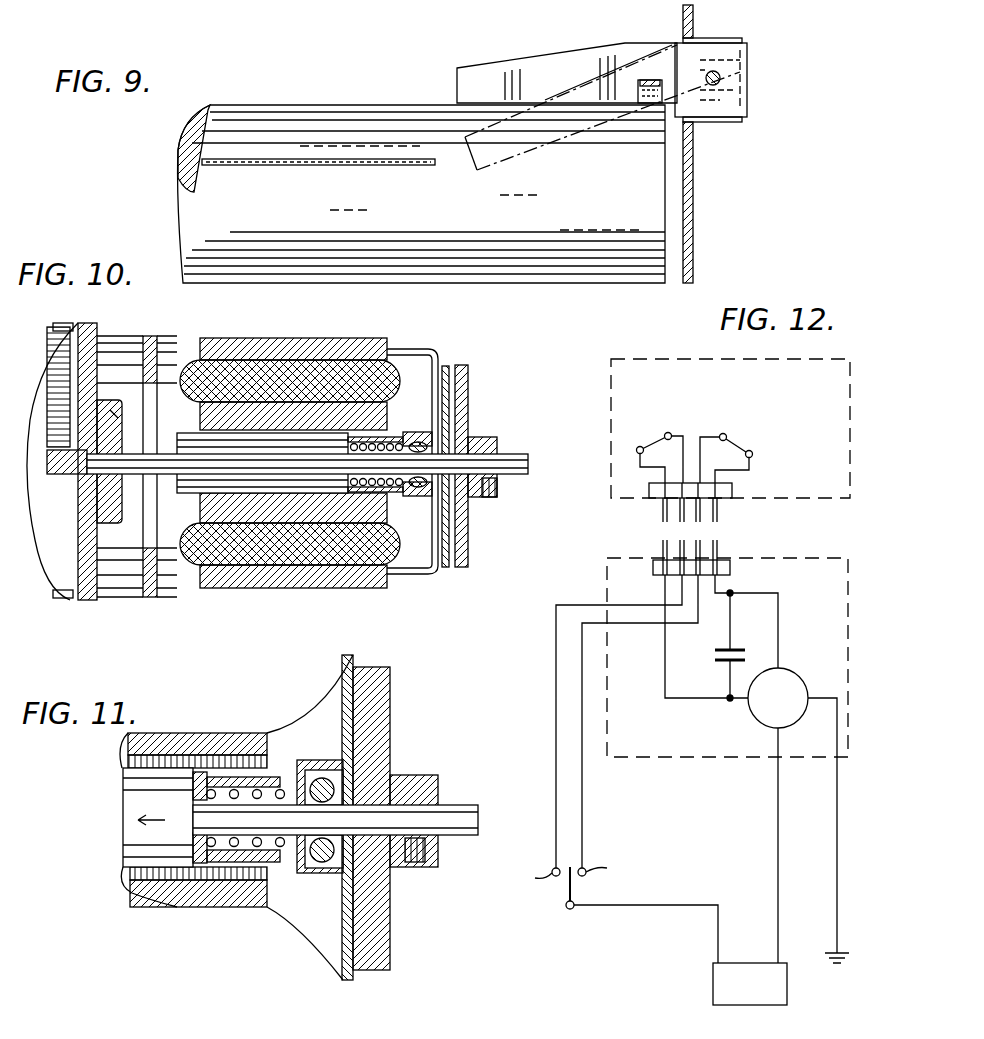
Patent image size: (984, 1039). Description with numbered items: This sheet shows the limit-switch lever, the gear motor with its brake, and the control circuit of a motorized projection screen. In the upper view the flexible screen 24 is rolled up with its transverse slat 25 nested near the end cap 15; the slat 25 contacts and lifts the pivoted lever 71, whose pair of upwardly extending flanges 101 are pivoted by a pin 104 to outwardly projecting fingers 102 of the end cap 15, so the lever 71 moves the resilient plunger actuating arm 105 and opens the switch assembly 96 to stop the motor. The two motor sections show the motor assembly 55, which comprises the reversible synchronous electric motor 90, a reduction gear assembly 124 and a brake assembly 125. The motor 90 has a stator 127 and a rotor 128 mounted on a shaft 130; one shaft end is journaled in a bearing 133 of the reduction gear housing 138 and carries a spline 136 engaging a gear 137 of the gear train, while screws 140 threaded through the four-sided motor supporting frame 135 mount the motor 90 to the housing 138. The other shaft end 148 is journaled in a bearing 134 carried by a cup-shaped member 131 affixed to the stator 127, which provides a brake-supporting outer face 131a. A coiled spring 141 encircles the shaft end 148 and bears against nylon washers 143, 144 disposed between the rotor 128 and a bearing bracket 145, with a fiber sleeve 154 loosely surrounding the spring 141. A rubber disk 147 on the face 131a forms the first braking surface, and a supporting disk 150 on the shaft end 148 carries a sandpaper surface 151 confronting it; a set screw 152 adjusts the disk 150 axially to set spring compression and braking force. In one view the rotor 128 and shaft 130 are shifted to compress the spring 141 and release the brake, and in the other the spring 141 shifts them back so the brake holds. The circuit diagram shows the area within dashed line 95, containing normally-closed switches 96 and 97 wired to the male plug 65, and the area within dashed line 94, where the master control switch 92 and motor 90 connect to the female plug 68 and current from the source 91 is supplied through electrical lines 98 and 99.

In FIG. 9, the end cap 15 is at (694, 170).
In FIG. 9, the flexible screen 24 is at (282, 166).
In FIG. 9, the slat 25 is at (548, 218).
In FIG. 9, the pivoted lever 71 is at (460, 103).
In FIG. 9, the flanges 101 is at (550, 65).
In FIG. 9, the fingers 102 is at (723, 38).
In FIG. 9, the pin 104 is at (720, 77).
In FIG. 9, the plunger actuating arm 105 is at (650, 95).
In FIG. 10, the motor assembly 55 is at (248, 605).
In FIG. 10, the electric motor 90 is at (418, 567).
In FIG. 12, the electric motor 90 is at (790, 683).
In FIG. 10, the reduction gear assembly 124 is at (70, 593).
In FIG. 10, the brake assembly 125 is at (500, 538).
In FIG. 11, the brake assembly 125 is at (427, 749).
In FIG. 10, the stator 127 is at (297, 343).
In FIG. 11, the stator 127 is at (177, 737).
In FIG. 10, the rotor 128 is at (232, 478).
In FIG. 11, the rotor 128 is at (123, 795).
In FIG. 10, the shaft 130 is at (160, 457).
In FIG. 10, the cup-shaped member 131 is at (420, 353).
In FIG. 10, the brake-supporting outer face 131a is at (444, 363).
In FIG. 11, the brake-supporting outer face 131a is at (353, 660).
In FIG. 10, the bearing 133 is at (106, 461).
In FIG. 10, the bearing 134 is at (425, 447).
In FIG. 11, the bearing 134 is at (325, 787).
In FIG. 10, the motor supporting frame 135 is at (152, 335).
In FIG. 10, the spline 136 is at (70, 460).
In FIG. 10, the gear 137 is at (63, 333).
In FIG. 10, the reduction gear housing 138 is at (90, 597).
In FIG. 10, the screws 140 is at (163, 350).
In FIG. 10, the coiled spring 141 is at (383, 417).
In FIG. 11, the coiled spring 141 is at (270, 787).
In FIG. 11, the nylon washer 143 is at (193, 853).
In FIG. 11, the nylon washer 144 is at (292, 867).
In FIG. 11, the bearing bracket 145 is at (327, 873).
In FIG. 10, the rubber disk 147 is at (450, 377).
In FIG. 11, the rubber disk 147 is at (357, 972).
In FIG. 10, the shaft end 148 is at (510, 460).
In FIG. 11, the shaft end 148 is at (453, 810).
In FIG. 10, the supporting disk 150 is at (468, 413).
In FIG. 11, the supporting disk 150 is at (390, 708).
In FIG. 10, the braking surface 151 is at (453, 567).
In FIG. 10, the set screw 152 is at (487, 492).
In FIG. 11, the set screw 152 is at (413, 862).
In FIG. 10, the fiber sleeve 154 is at (383, 503).
In FIG. 11, the fiber sleeve 154 is at (243, 853).
In FIG. 12, the male plug 65 is at (732, 492).
In FIG. 12, the female plug 68 is at (730, 571).
In FIG. 12, the source of electric current 91 is at (765, 998).
In FIG. 12, the master control switch 92 is at (574, 890).
In FIG. 12, the dashed line 94 is at (846, 612).
In FIG. 12, the dashed line 95 is at (850, 415).
In FIG. 12, the switch assembly 96 is at (743, 440).
In FIG. 12, the electric switch 97 is at (645, 440).
In FIG. 12, the electrical line 98 is at (673, 907).
In FIG. 12, the electrical line 99 is at (783, 837).